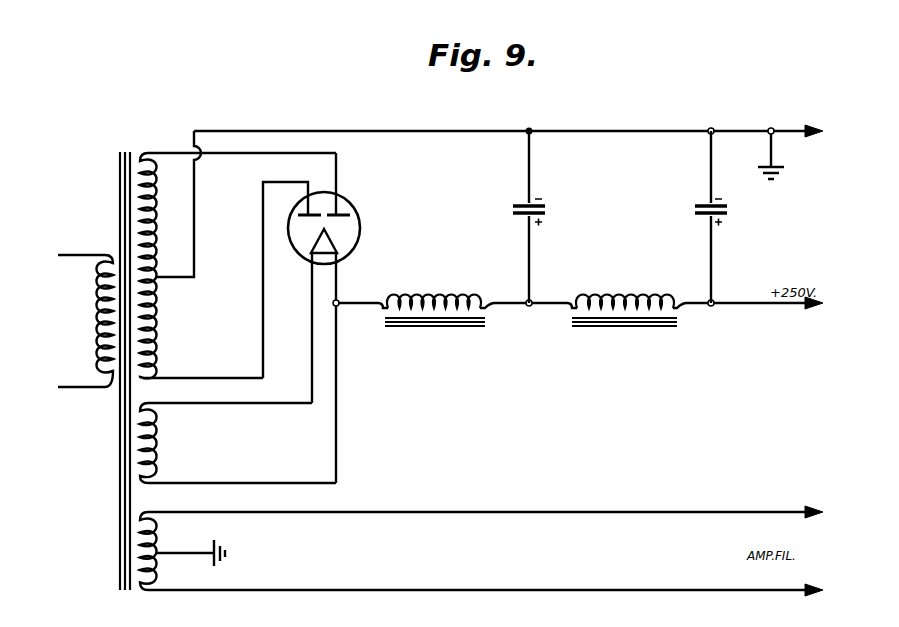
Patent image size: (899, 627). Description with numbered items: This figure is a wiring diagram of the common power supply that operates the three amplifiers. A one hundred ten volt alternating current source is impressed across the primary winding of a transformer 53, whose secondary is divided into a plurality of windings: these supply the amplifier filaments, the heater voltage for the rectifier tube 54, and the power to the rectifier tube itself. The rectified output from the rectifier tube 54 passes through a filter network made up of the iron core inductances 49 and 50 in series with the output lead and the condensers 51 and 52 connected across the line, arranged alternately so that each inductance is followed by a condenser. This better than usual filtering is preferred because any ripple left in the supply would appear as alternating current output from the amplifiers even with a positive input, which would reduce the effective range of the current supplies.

The transformer 53 is at (137, 152).
The rectifier tube 54 is at (361, 226).
The iron core inductance 49 is at (428, 306).
The iron core inductance 50 is at (613, 306).
The condenser 51 is at (547, 213).
The condenser 52 is at (729, 213).